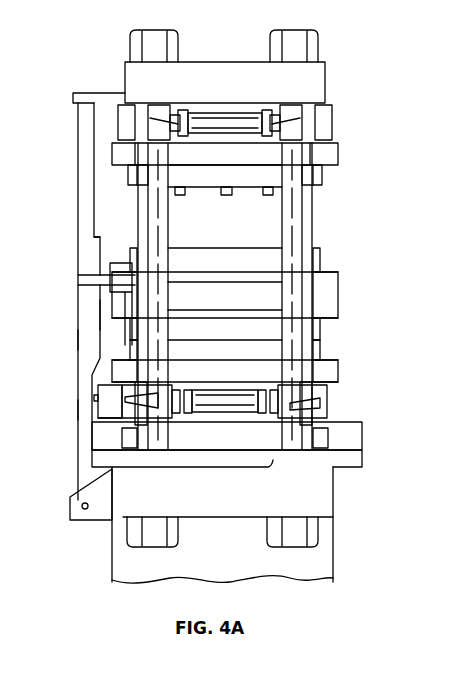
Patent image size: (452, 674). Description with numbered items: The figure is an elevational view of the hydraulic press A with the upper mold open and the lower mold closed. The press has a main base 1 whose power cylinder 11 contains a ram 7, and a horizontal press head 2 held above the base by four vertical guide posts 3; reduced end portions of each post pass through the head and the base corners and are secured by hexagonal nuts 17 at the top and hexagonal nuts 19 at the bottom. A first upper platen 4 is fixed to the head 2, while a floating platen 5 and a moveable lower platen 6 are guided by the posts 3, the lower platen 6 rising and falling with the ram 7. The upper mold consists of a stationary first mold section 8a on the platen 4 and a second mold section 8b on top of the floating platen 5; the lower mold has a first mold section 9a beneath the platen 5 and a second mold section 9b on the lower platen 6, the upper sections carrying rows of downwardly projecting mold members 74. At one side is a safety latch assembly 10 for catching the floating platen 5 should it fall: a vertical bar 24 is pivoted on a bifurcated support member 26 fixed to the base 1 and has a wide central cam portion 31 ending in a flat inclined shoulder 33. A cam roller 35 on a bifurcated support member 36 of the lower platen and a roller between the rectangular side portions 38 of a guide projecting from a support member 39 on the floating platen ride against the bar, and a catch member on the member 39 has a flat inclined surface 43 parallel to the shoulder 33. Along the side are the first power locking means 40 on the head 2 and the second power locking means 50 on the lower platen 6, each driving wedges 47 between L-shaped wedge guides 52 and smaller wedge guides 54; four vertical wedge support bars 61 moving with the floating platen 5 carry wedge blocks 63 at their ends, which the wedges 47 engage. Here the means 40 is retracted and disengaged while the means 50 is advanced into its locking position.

The main base 1 is at (345, 572).
The press head 2 is at (318, 85).
The guide posts 3 is at (168, 234).
The first upper platen 4 is at (338, 152).
The floating platen 5 is at (332, 300).
The moveable lower platen 6 is at (335, 368).
The ram 7 is at (233, 428).
The first mold section 8a is at (318, 178).
The second mold section 8b is at (320, 258).
The first mold section 9a is at (318, 330).
The second mold section 9b is at (318, 350).
The safety latch assembly 10 is at (78, 190).
The power cylinder 11 is at (135, 567).
The hexagonal nut 17 is at (274, 44).
The hexagonal nut 19 is at (272, 528).
The vertical bar 24 is at (80, 410).
The bifurcated support member 26 is at (95, 512).
The wide central cam portion 31 is at (85, 340).
The flat inclined shoulder 33 is at (95, 238).
The cam roller 35 is at (98, 397).
The bifurcated support member 36 is at (108, 420).
The rectangular side portions 38 is at (80, 280).
The support member 39 is at (120, 275).
The first power locking means 40 is at (219, 106).
The flat inclined surface 43 is at (100, 315).
The wedge 47 is at (157, 122).
The second power locking means 50 is at (200, 425).
The wedge guides 52 is at (283, 146).
The smaller wedge guides 54 is at (322, 120).
The vertical wedge support bars 61 is at (305, 232).
The wedge blocks 63 is at (146, 173).
The mold members 74 is at (227, 195).
The hydraulic press A is at (348, 70).